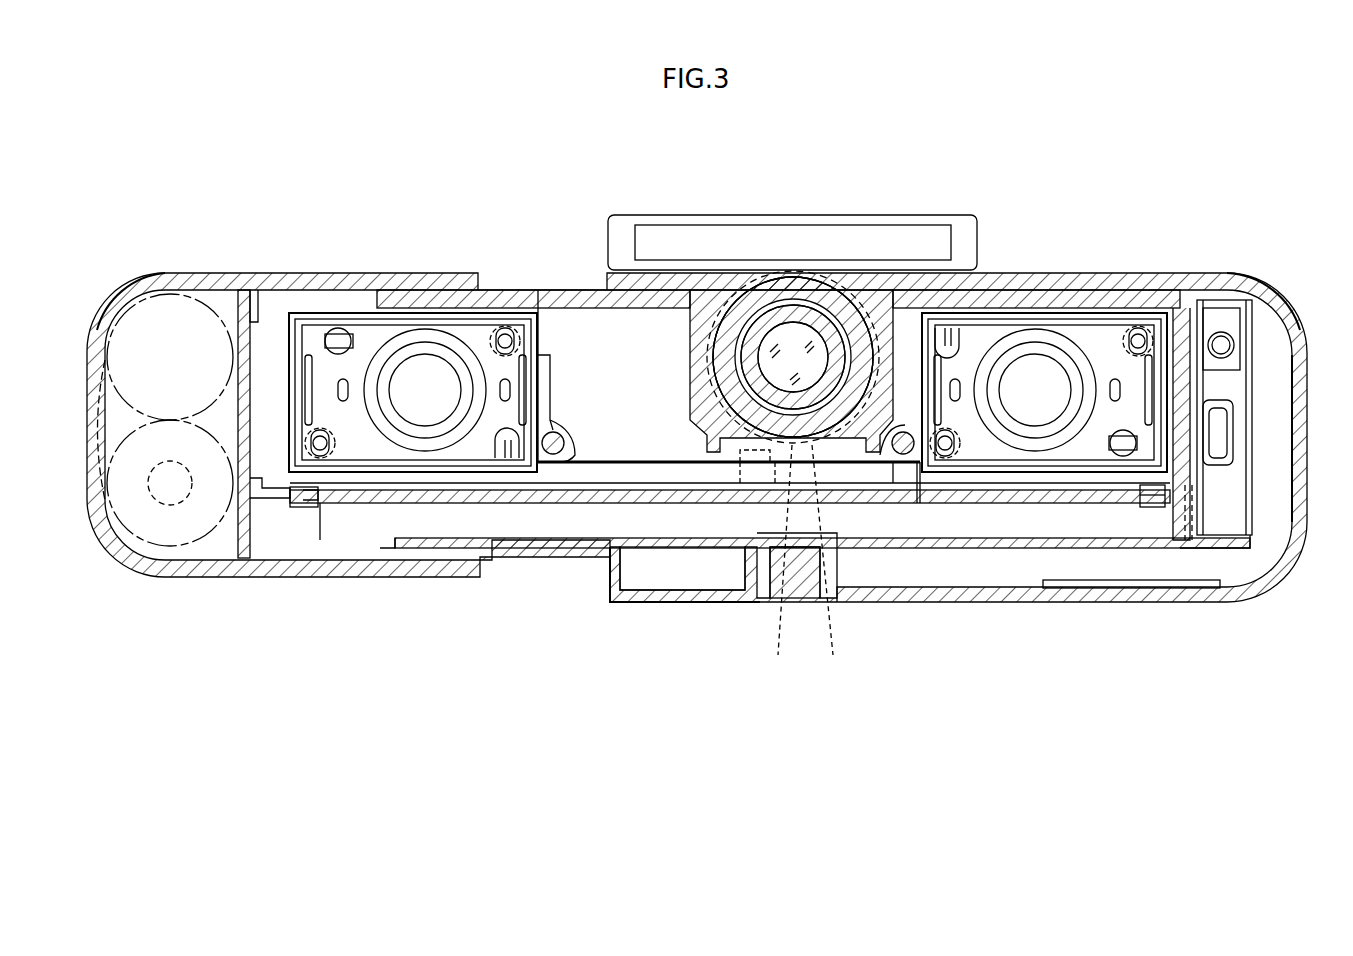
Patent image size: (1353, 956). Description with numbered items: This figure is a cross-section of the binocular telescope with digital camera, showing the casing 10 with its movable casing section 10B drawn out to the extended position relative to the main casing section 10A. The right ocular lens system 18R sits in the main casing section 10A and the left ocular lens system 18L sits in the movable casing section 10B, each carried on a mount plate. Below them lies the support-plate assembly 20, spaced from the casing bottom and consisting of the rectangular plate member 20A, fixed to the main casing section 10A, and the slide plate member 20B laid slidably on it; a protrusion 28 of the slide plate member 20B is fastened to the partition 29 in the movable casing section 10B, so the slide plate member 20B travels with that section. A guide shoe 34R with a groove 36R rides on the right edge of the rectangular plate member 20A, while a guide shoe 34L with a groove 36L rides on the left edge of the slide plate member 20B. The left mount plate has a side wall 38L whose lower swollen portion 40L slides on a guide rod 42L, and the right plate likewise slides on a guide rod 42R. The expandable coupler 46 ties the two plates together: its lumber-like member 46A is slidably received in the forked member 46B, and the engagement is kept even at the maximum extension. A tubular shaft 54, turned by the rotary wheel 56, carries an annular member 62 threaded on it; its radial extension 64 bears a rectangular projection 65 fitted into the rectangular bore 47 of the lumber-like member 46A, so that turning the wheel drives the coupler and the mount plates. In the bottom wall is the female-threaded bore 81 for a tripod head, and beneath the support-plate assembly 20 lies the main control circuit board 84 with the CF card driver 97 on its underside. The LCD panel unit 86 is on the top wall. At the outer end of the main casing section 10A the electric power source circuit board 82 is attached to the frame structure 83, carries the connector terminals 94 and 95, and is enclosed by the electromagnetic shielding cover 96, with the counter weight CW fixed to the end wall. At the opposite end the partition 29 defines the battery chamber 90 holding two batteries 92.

The casing 10 is at (1030, 247).
The main casing section 10A is at (1280, 290).
The movable casing section 10B is at (131, 278).
The ocular lens system 18L is at (447, 404).
The ocular lens system 18R is at (1058, 404).
The support-plate assembly 20 is at (440, 503).
The rectangular plate member 20A is at (572, 549).
The slide plate member 20B is at (338, 505).
The protrusion 28 is at (275, 482).
The partition 29 is at (256, 322).
The guide shoe 34L is at (303, 508).
The guide shoe 34R is at (1150, 509).
The groove 36L is at (318, 502).
The groove 36R is at (1142, 520).
The side wall 38L is at (565, 377).
The swollen portion 40L is at (575, 458).
The guide rod 42L is at (565, 432).
The guide rod 42R is at (918, 505).
The expandable coupler 46 is at (652, 458).
The lumber-like member 46A is at (893, 485).
The forked member 46B is at (670, 503).
The rectangular bore 47 is at (831, 565).
The tubular shaft 54 is at (800, 290).
The rotary wheel 56 is at (862, 300).
The annular member 62 is at (725, 296).
The radial extension 64 is at (745, 457).
The rectangular projection 65 is at (781, 565).
The female-threaded bore 81 is at (800, 580).
The electric power source circuit board 82 is at (1212, 515).
The frame structure 83 is at (1140, 300).
The main control circuit board 84 is at (727, 550).
The LCD panel unit 86 is at (600, 242).
The battery chamber 90 is at (92, 470).
The batteries 92 is at (186, 312).
The connector terminal 94 is at (1240, 352).
The connector terminal 95 is at (1233, 432).
The electromagnetic shielding cover 96 is at (1250, 500).
The CF card driver 97 is at (1075, 590).
The counter weight CW is at (1290, 352).